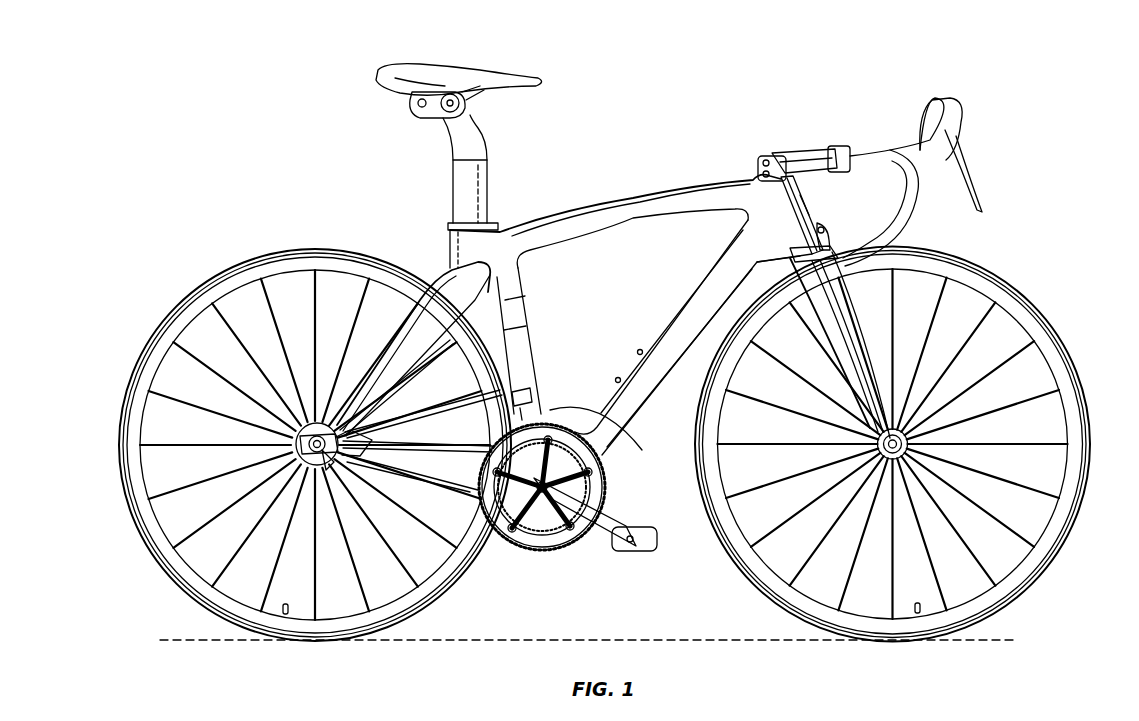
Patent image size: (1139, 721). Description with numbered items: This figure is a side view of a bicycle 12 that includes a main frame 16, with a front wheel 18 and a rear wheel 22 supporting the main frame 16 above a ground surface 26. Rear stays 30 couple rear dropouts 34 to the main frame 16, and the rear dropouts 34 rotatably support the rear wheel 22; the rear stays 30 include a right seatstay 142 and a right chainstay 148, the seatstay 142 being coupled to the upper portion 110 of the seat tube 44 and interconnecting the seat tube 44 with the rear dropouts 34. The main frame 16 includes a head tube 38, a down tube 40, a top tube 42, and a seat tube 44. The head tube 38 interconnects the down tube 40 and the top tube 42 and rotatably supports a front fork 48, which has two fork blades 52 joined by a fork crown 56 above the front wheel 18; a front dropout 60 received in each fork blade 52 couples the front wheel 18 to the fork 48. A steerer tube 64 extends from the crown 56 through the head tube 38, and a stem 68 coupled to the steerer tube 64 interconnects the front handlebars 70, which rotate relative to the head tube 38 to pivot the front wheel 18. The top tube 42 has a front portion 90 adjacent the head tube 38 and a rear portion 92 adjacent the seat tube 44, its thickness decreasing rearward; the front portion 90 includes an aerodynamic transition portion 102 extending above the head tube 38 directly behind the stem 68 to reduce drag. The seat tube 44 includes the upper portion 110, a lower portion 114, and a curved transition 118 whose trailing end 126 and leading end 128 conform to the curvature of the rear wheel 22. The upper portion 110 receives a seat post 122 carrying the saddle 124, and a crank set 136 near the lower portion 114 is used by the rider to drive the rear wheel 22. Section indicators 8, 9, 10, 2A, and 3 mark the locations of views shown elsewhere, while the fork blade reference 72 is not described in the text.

The bicycle 12 is at (750, 44).
The main frame 16 is at (606, 201).
The front wheel 18 is at (1035, 305).
The rear wheel 22 is at (137, 540).
The ground surface 26 is at (1012, 640).
The rear stays 30 is at (302, 358).
The rear dropouts 34 is at (332, 506).
The head tube 38 is at (803, 186).
The down tube 40 is at (651, 334).
The top tube 42 is at (573, 236).
The seat tube 44 is at (527, 318).
The front fork 48 is at (847, 358).
The fork blades 52 is at (842, 316).
The fork crown 56 is at (822, 232).
The front dropout 60 is at (812, 468).
The steerer tube 64 is at (770, 158).
The stem 68 is at (813, 150).
The front handlebars 70 is at (915, 212).
The fork blade 72 is at (778, 272).
The front portion 90 is at (722, 164).
The rear portion 92 is at (548, 210).
The aerodynamic transition portion 102 is at (736, 176).
The upper portion 110 is at (448, 228).
The lower portion 114 is at (596, 428).
The curved transition 118 is at (520, 346).
The seat post 122 is at (450, 166).
The saddle 124 is at (451, 68).
The trailing end 126 is at (528, 362).
The leading end 128 is at (536, 345).
The crank set 136 is at (548, 550).
The right seatstay 142 is at (348, 346).
The right chainstay 148 is at (377, 463).
The section line 8 is at (637, 142).
The section line 9 is at (377, 345).
The section line 10 is at (420, 413).
The section line 2A is at (94, 354).
The section line 3 is at (362, 683).